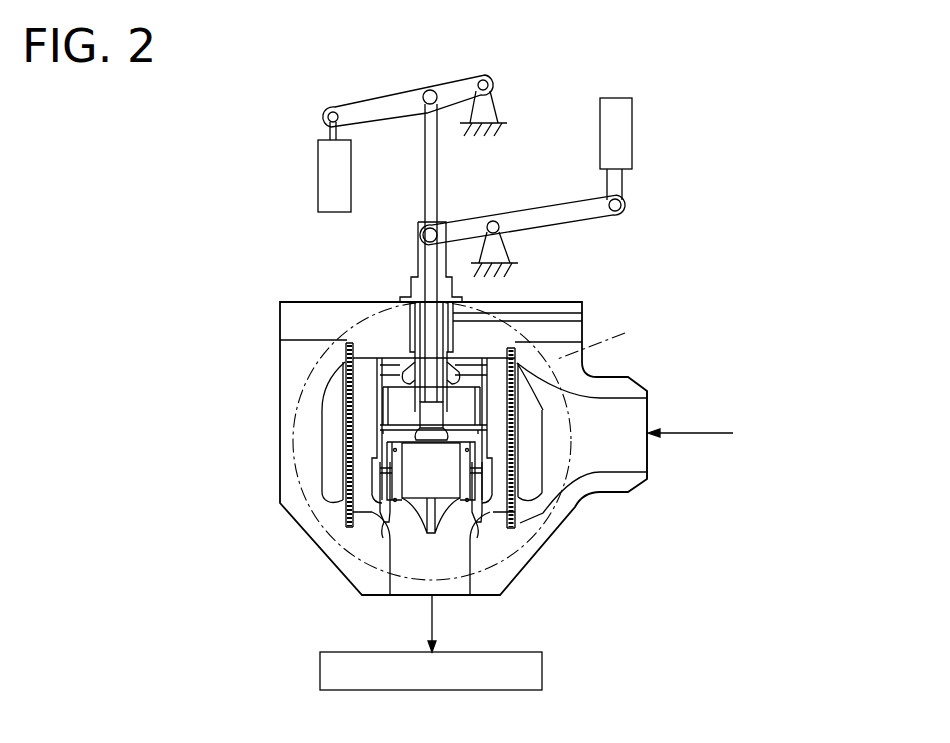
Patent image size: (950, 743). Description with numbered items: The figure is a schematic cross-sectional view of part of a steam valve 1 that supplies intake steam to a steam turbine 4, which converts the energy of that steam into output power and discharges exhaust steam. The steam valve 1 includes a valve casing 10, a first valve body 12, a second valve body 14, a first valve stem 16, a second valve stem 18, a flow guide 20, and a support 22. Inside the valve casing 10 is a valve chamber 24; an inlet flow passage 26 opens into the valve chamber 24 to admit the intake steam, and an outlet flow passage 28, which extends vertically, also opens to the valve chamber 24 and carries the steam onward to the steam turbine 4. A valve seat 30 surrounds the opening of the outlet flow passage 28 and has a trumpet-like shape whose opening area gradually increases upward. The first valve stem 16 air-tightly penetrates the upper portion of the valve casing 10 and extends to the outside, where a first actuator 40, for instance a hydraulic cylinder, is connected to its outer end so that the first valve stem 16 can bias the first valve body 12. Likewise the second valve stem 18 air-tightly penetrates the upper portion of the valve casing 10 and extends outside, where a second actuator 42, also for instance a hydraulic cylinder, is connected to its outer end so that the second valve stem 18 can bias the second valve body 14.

The steam valve 1 is at (688, 81).
The steam turbine 4 is at (545, 652).
The valve casing 10 is at (595, 287).
The first valve body 12 is at (487, 522).
The second valve body 14 is at (484, 477).
The first valve stem 16 is at (425, 198).
The second valve stem 18 is at (418, 270).
The flow guide 20 is at (440, 518).
The support 22 is at (497, 457).
The valve chamber 24 is at (367, 428).
The inlet flow passage 26 is at (633, 445).
The outlet flow passage 28 is at (408, 587).
The valve seat 30 is at (387, 520).
The first actuator 40 is at (318, 176).
The second actuator 42 is at (633, 133).